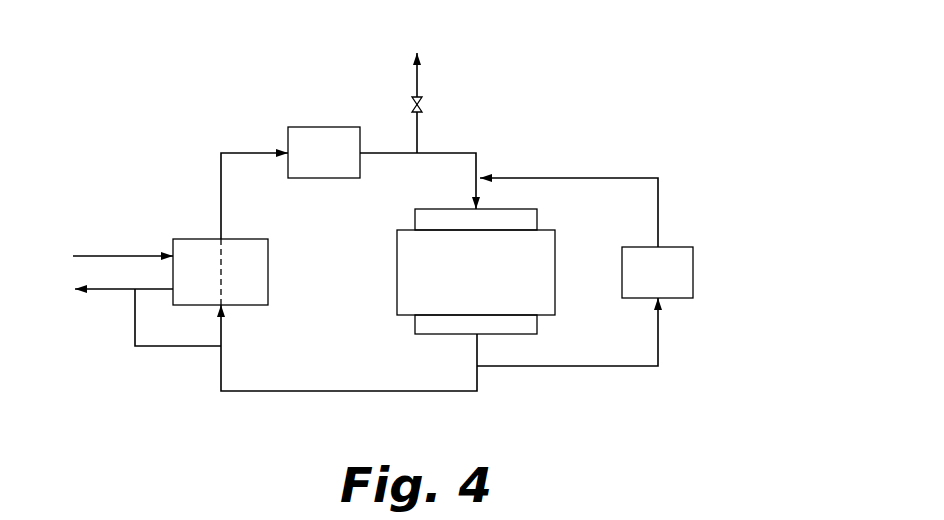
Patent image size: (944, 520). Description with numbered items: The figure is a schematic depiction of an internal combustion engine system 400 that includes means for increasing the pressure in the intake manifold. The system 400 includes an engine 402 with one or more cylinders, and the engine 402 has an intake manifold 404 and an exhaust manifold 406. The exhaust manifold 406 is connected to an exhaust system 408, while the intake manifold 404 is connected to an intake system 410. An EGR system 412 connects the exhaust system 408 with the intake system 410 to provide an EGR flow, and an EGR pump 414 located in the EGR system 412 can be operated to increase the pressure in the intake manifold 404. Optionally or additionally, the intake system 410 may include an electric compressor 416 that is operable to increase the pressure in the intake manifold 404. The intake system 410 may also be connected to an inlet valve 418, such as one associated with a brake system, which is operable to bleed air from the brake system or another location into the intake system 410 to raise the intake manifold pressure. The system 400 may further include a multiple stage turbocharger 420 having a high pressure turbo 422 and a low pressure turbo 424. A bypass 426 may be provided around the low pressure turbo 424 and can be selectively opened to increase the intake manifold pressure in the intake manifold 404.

The system 400 is at (652, 73).
The engine 402 is at (494, 283).
The intake manifold 404 is at (537, 220).
The exhaust manifold 406 is at (537, 322).
The exhaust system 408 is at (577, 368).
The intake system 410 is at (448, 153).
The EGR system 412 is at (660, 203).
The EGR pump 414 is at (675, 284).
The electric compressor 416 is at (341, 164).
The inlet valve 418 is at (413, 98).
The multiple stage turbocharger 420 is at (268, 292).
The high pressure turbo 422 is at (251, 262).
The low pressure turbo 424 is at (190, 239).
The bypass 426 is at (157, 348).